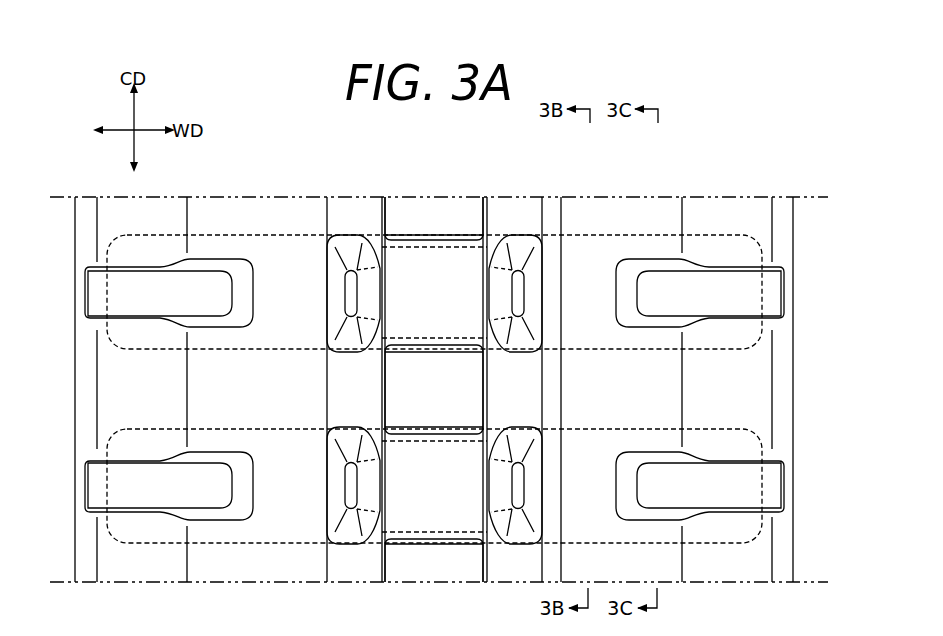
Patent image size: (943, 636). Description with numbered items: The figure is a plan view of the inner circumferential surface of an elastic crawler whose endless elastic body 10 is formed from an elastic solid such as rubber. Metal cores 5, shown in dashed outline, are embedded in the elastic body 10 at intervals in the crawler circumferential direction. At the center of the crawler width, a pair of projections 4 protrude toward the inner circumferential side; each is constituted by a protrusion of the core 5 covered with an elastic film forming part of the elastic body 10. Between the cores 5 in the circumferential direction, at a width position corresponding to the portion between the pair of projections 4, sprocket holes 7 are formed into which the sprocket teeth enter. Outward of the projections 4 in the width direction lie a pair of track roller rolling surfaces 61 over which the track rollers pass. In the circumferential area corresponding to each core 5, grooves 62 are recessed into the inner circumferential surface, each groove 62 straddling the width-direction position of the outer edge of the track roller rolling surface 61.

The projection 4 is at (340, 289).
The metal core 5 is at (238, 353).
The sprocket hole 7 is at (443, 579).
The elastic body 10 is at (743, 392).
The track roller rolling surface 61 is at (327, 188).
The groove 62 is at (434, 389).